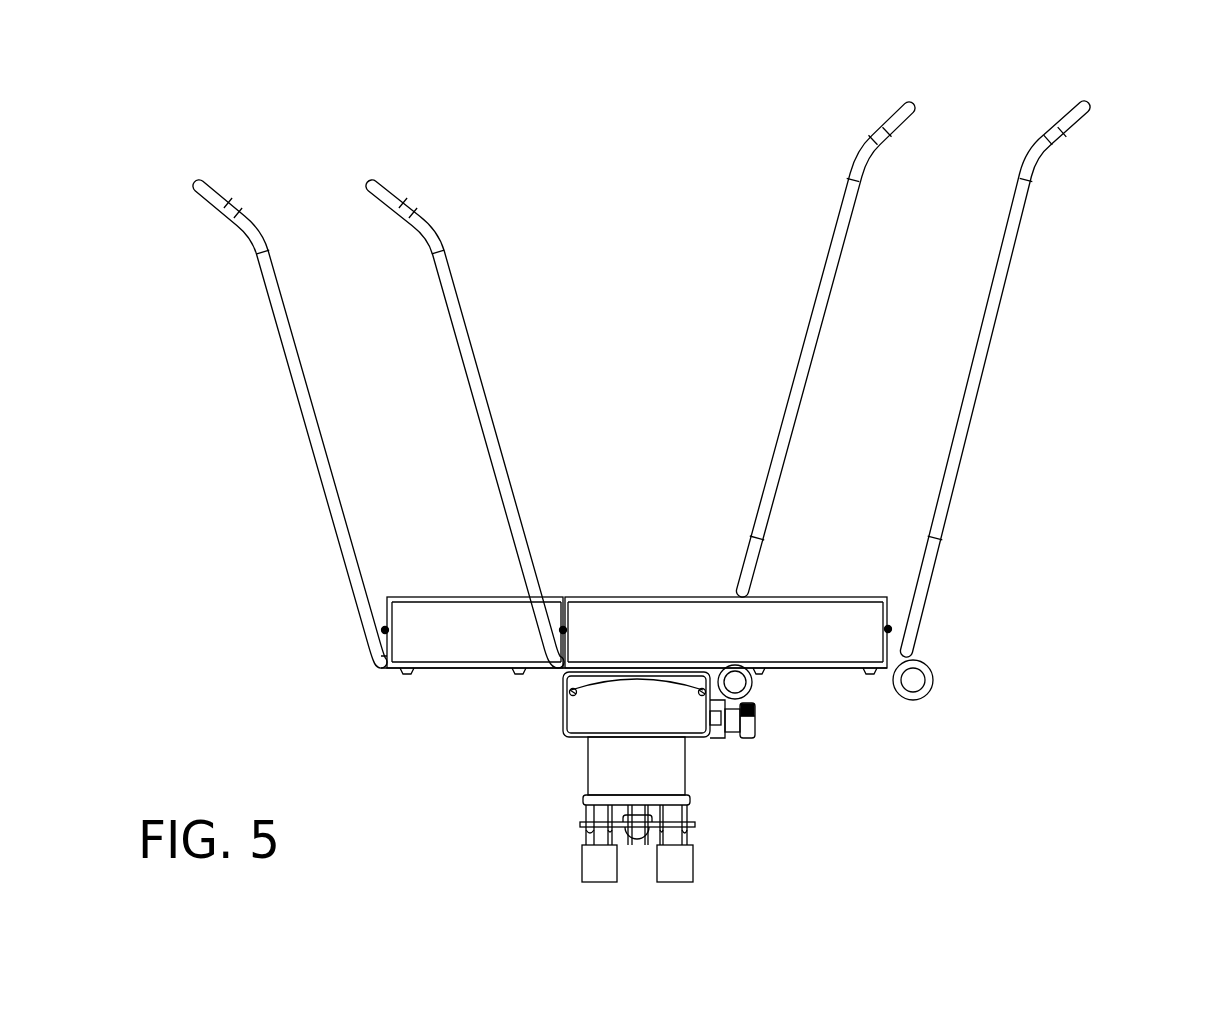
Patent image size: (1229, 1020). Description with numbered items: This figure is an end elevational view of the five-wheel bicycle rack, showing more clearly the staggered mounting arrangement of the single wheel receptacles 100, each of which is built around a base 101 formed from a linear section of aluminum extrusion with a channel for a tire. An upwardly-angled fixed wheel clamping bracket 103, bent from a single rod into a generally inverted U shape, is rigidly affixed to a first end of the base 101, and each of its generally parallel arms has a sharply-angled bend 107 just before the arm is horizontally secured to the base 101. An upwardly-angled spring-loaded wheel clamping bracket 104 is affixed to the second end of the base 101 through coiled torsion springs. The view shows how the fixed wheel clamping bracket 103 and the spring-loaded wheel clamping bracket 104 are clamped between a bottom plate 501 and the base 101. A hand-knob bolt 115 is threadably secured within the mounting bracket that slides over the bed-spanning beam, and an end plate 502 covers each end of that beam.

The single wheel receptacle 100 is at (701, 463).
The base 101 is at (492, 620).
The fixed wheel clamping bracket 103 is at (298, 383).
The spring-loaded wheel clamping bracket 104 is at (807, 348).
The sharply-angled bend 107 is at (375, 656).
The hand-knob bolt 115 is at (748, 723).
The bottom plate 501 is at (458, 668).
The end plate 502 is at (595, 712).